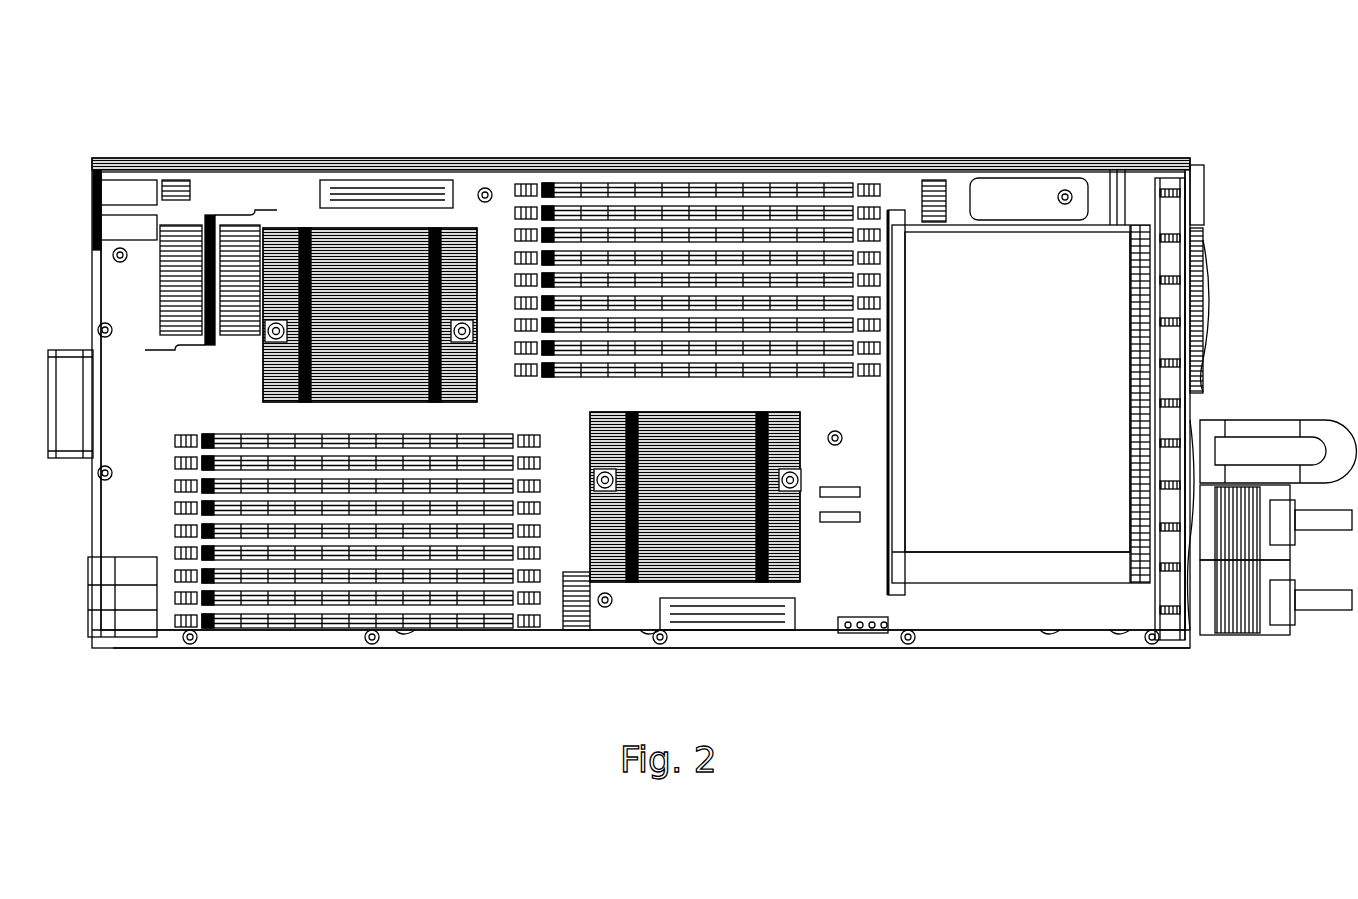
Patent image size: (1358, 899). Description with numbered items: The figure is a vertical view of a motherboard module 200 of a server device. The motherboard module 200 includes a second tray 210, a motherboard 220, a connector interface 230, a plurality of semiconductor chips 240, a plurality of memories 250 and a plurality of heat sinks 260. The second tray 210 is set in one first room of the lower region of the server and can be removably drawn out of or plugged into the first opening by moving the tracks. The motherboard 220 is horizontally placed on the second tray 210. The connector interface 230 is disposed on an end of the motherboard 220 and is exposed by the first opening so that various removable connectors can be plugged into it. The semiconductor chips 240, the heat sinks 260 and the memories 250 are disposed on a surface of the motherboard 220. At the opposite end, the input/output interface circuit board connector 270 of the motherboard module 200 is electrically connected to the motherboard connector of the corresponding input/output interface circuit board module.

The motherboard module 200 is at (115, 62).
The second tray 210 is at (570, 168).
The motherboard 220 is at (470, 197).
The connector interface 230 is at (1193, 403).
The semiconductor chips 240 is at (303, 224).
The memories 250 is at (708, 218).
The heat sinks 260 is at (366, 228).
The input/output interface circuit board connector 270 is at (72, 378).